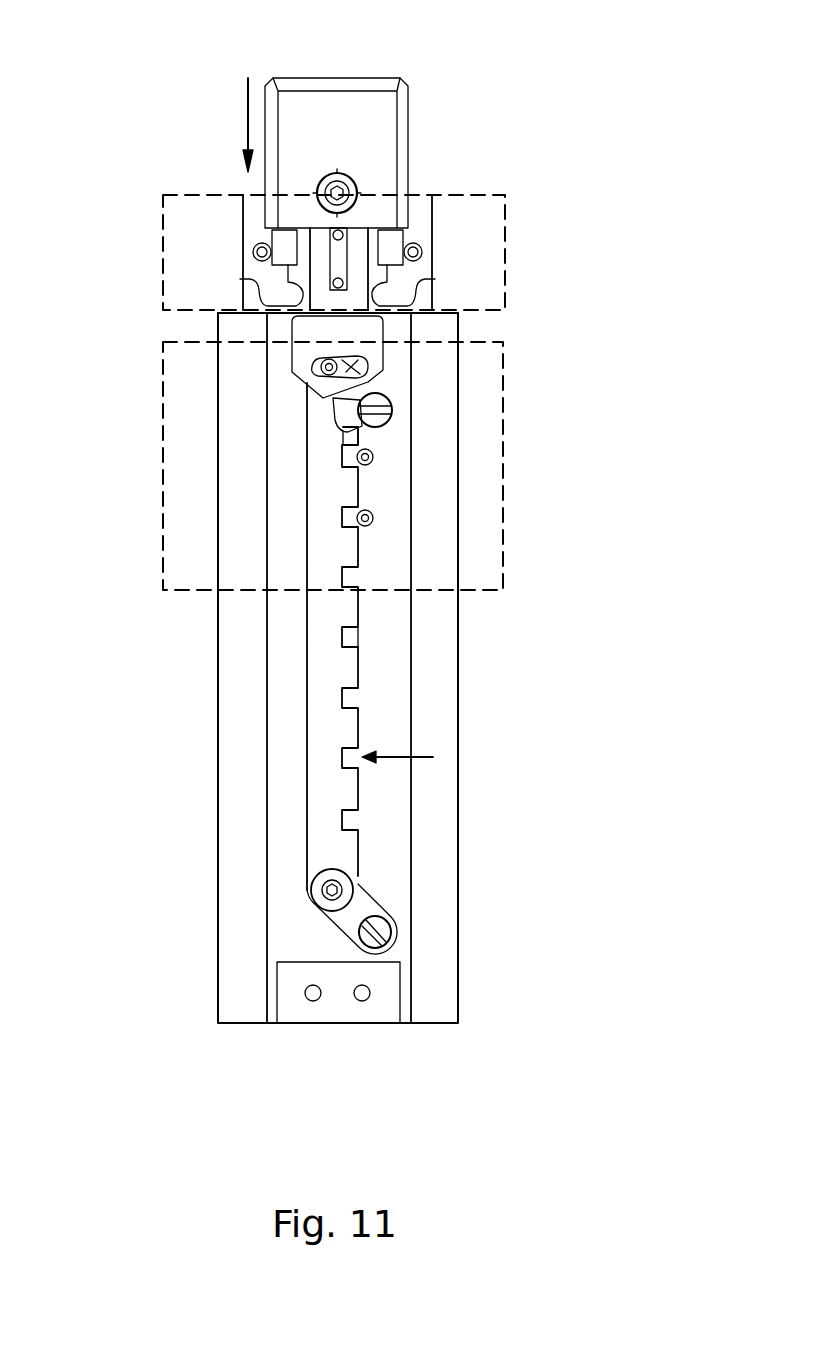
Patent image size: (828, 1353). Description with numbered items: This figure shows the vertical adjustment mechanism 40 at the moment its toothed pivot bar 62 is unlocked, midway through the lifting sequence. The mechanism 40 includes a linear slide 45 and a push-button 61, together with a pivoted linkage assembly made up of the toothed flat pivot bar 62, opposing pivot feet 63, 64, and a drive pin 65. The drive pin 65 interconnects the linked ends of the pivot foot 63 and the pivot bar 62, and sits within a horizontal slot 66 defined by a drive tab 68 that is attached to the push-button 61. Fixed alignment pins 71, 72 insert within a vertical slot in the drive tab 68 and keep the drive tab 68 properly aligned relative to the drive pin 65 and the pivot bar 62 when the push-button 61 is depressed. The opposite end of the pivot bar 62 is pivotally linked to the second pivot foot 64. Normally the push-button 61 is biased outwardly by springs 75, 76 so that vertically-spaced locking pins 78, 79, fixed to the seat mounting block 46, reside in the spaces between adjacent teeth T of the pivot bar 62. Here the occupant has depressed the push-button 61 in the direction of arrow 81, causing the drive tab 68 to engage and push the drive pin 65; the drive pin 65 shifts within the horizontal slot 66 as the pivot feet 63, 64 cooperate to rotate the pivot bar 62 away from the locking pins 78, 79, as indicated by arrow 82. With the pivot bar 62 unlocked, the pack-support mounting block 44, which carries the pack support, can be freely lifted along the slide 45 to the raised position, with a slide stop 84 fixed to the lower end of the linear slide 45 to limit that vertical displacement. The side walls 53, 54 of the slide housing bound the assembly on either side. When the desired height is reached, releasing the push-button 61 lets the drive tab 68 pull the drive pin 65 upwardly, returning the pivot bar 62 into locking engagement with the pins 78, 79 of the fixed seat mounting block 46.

The vertical adjustment mechanism 40 is at (623, 167).
The pack-support mounting block 44 is at (160, 252).
The linear slide 45 is at (290, 682).
The seat mounting block 46 is at (190, 418).
The left side wall 53 is at (233, 773).
The right side wall 54 is at (443, 922).
The push-button 61 is at (349, 110).
The toothed flat pivot bar 62 is at (317, 520).
The pivot foot 63 is at (383, 394).
The pivot foot 64 is at (365, 912).
The drive pin 65 is at (370, 372).
The horizontal slot 66 is at (302, 395).
The drive tab 68 is at (307, 352).
The fixed alignment pin 71 is at (343, 233).
The fixed alignment pin 72 is at (331, 286).
The spring 75 is at (277, 238).
The spring 76 is at (398, 258).
The locking pin 78 is at (373, 457).
The locking pin 79 is at (373, 519).
The arrow 81 is at (247, 103).
The arrow 82 is at (423, 756).
The slide stop 84 is at (340, 1010).
The teeth T is at (412, 680).